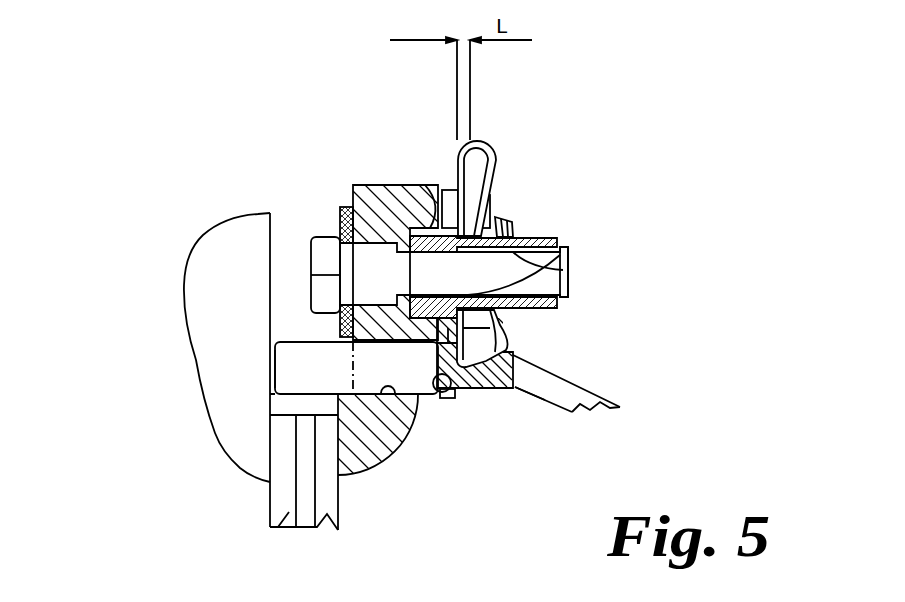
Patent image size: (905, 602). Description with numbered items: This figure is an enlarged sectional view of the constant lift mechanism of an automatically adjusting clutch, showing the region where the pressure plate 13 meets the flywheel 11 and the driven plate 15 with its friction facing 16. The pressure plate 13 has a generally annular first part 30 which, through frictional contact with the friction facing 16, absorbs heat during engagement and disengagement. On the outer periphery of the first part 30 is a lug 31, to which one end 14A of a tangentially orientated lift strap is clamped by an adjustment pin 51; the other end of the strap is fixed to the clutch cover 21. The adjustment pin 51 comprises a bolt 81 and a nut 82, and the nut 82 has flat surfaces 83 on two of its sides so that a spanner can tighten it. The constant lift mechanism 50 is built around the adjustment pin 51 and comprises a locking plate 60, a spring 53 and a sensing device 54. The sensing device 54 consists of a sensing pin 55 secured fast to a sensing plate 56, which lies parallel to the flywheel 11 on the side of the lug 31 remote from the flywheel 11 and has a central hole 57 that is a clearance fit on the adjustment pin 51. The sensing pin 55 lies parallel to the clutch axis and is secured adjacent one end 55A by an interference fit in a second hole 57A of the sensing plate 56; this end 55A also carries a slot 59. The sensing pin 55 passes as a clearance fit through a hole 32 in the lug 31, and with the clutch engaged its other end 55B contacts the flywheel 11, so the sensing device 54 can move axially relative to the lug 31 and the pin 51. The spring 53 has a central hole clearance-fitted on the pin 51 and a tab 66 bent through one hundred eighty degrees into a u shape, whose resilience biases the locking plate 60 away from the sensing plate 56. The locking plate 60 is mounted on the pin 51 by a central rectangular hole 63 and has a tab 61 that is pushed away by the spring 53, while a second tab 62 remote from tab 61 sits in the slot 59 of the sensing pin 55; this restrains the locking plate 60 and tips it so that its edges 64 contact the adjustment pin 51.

The flywheel 11 is at (200, 312).
The pressure plate 13 is at (360, 443).
The one end of lift strap 14A is at (343, 215).
The driven plate 15 is at (307, 488).
The friction facing 16 is at (320, 518).
The clutch cover 21 is at (610, 398).
The first part 30 is at (383, 440).
The lug 31 is at (367, 190).
The hole 32 is at (390, 397).
The fastening assembly 50 is at (567, 181).
The adjustment pin 51 is at (569, 236).
The spring 53 is at (483, 133).
The sensing device 54 is at (297, 355).
The sensing pin 55 is at (268, 400).
The end of sensing pin 55A is at (512, 388).
The end of sensing pin 55B is at (268, 385).
The sensing plate 56 is at (458, 402).
The central hole 57 is at (422, 215).
The second hole 57A is at (442, 398).
The slot 59 is at (500, 393).
The locking plate 60 is at (508, 222).
The tab 61 is at (497, 220).
The second tab 62 is at (513, 353).
The central rectangular hole 63 is at (508, 323).
The edges 64 is at (563, 270).
The tab 66 is at (478, 233).
The bolt 81 is at (307, 233).
The nut 82 is at (565, 305).
The flat surfaces 83 is at (548, 237).